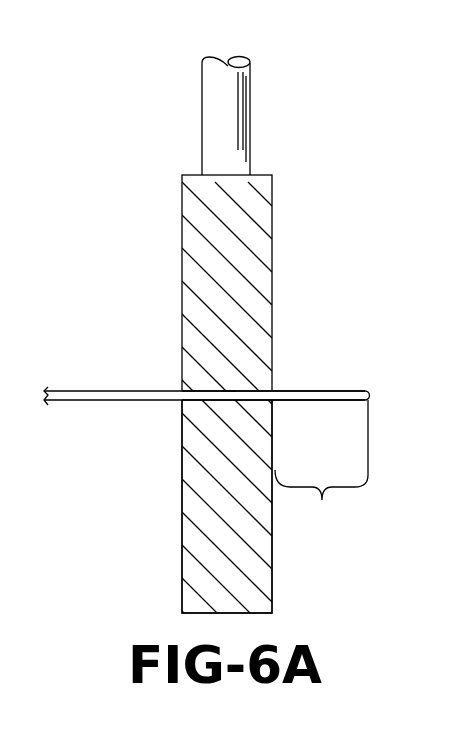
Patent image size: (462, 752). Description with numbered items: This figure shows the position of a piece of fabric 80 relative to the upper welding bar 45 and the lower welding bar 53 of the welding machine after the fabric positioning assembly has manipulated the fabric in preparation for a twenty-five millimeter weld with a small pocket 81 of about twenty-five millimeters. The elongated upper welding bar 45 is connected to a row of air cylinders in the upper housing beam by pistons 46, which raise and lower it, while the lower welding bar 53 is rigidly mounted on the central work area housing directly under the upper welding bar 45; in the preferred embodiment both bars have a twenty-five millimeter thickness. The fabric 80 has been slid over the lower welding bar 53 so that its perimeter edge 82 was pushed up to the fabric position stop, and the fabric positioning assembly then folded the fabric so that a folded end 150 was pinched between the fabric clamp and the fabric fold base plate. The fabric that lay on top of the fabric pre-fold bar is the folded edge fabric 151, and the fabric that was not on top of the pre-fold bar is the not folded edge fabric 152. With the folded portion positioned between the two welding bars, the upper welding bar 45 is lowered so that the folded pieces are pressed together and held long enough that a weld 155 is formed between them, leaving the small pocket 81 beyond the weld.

The pistons 46 is at (203, 128).
The upper welding bar 45 is at (190, 273).
The lower welding bar 53 is at (192, 528).
The fabric 80 is at (97, 403).
The perimeter edge 82 is at (200, 387).
The weld 155 is at (228, 388).
The folded end 150 is at (369, 385).
The folded edge fabric 151 is at (322, 388).
The not folded edge fabric 152 is at (315, 404).
The pocket 81 is at (321, 466).